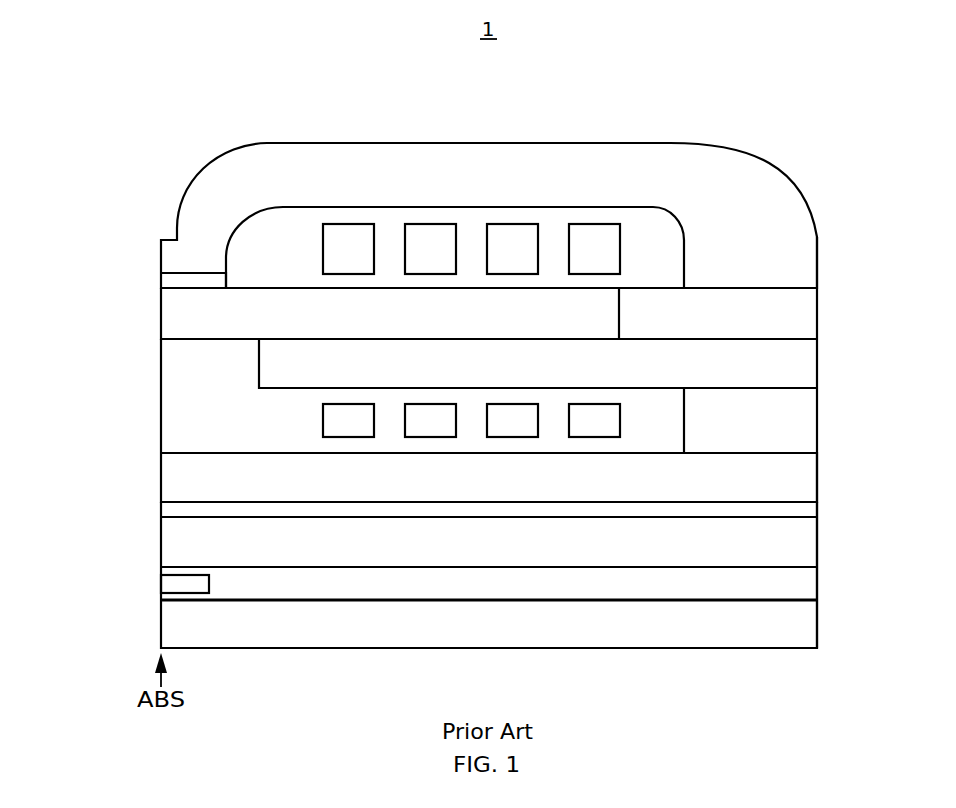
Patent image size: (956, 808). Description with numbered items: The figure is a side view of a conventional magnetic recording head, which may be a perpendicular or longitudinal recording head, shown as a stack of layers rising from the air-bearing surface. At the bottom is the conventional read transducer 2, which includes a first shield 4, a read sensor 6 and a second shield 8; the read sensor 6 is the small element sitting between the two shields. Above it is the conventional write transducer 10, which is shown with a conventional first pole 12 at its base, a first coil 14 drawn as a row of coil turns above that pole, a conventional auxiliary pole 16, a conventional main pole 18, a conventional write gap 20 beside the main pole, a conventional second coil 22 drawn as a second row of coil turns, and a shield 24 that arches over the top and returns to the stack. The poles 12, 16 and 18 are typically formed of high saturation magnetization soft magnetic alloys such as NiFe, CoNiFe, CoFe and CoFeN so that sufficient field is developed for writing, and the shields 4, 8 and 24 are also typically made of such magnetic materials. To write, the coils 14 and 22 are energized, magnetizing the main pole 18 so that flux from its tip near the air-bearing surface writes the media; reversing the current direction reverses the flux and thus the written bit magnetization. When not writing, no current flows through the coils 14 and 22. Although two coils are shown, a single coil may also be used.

The conventional read transducer 2 is at (847, 518).
The shield 4 is at (817, 632).
The read sensor 6 is at (161, 583).
The shield 8 is at (161, 551).
The conventional write transducer 10 is at (847, 142).
The conventional first pole (P1) 12 is at (161, 495).
The first coil 14 is at (290, 417).
The conventional auxiliary pole 16 is at (259, 370).
The conventional main pole 18 is at (161, 322).
The conventional write gap 20 is at (161, 287).
The conventional second coil 22 is at (655, 256).
The shield 24 is at (161, 240).